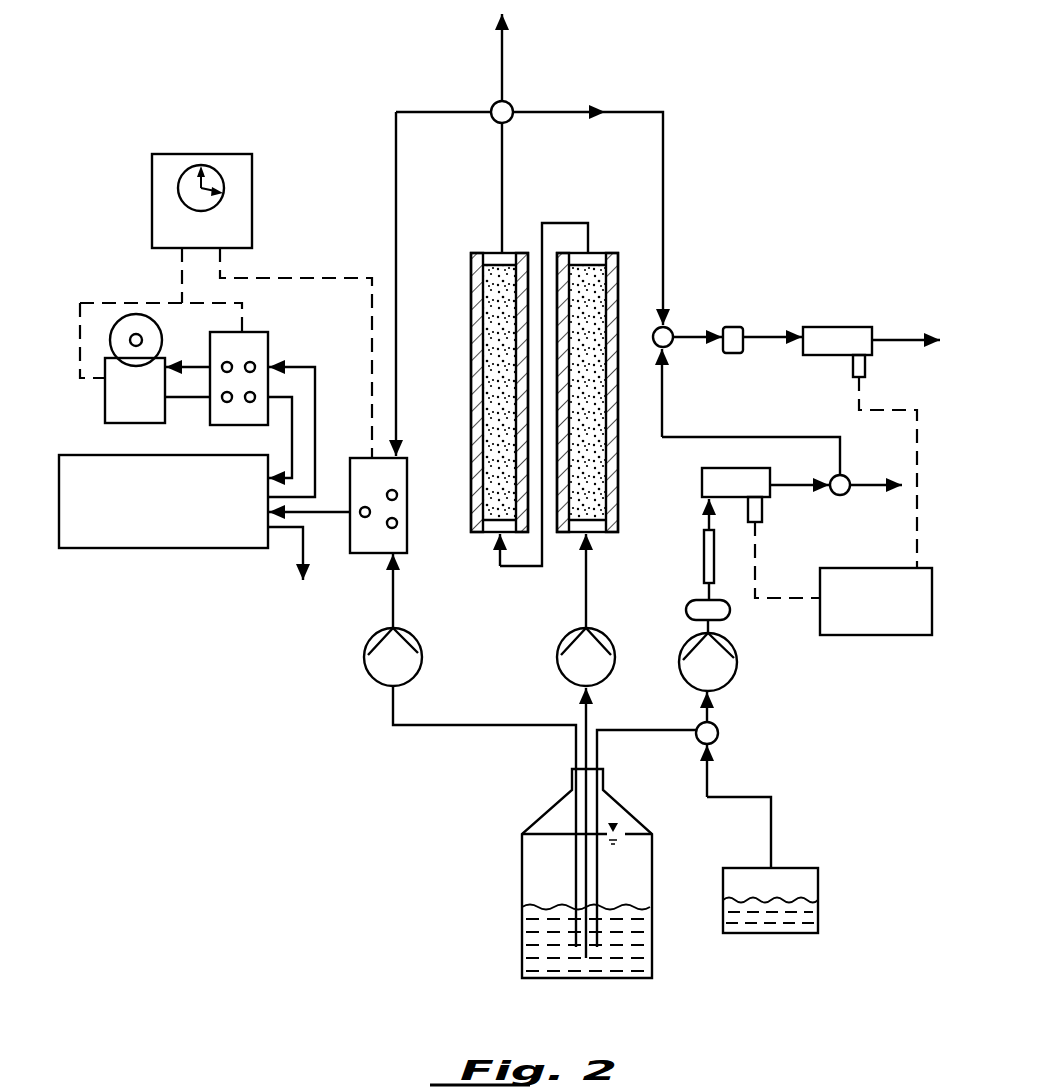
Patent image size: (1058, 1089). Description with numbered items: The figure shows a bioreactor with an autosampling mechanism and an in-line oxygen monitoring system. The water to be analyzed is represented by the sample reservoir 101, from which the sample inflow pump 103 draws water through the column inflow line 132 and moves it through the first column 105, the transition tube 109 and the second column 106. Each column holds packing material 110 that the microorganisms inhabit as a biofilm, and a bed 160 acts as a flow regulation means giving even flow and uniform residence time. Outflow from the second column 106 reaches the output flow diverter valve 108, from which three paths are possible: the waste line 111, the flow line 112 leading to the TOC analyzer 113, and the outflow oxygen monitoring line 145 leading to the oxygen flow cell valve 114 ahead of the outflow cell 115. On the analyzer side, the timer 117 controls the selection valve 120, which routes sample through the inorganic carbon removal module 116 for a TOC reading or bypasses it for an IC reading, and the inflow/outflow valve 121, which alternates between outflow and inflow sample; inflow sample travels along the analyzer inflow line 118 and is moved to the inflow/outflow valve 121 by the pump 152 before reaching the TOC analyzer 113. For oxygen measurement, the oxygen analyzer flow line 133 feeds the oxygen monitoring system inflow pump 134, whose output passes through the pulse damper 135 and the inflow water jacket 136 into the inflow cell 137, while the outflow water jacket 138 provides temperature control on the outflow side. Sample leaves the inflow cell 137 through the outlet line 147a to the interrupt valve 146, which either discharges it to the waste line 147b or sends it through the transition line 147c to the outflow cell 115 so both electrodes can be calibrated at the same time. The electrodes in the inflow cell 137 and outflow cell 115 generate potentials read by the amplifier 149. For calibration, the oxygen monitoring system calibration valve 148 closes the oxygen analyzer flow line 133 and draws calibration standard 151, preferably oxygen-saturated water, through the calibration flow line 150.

The sample reservoir 101 is at (521, 884).
The sample inflow pump 103 is at (572, 664).
The first column 105 is at (622, 300).
The second column 106 is at (469, 318).
The output flow diverter valve 108 is at (507, 108).
The transition tube 109 is at (558, 222).
The packing material 110 is at (655, 458).
The waste line 111 is at (505, 55).
The flow line 112 is at (396, 205).
The TOC analyzer 113 is at (187, 540).
The oxygen flow cell valve 114 is at (668, 326).
The outflow cell 115 is at (837, 330).
The inorganic carbon removal module 116 is at (115, 397).
The timer 117 is at (228, 152).
The analyzer inflow line 118 is at (497, 727).
The selection valve 120 is at (265, 347).
The inflow/outflow valve 121 is at (362, 552).
The column inflow line 132 is at (590, 718).
The oxygen analyzer flow line 133 is at (660, 733).
The oxygen monitoring system inflow pump 134 is at (733, 668).
The pulse damper 135 is at (727, 612).
The inflow water jacket 136 is at (704, 549).
The inflow cell 137 is at (743, 482).
The outflow water jacket 138 is at (735, 327).
The outflow oxygen monitoring line 145 is at (645, 112).
The interrupt valve 146 is at (850, 478).
The outlet line 147a is at (802, 490).
The waste line 147b is at (877, 490).
The transition line 147c is at (665, 410).
The oxygen monitoring system calibration valve 148 is at (718, 735).
The amplifier 149 is at (905, 632).
The calibration flow line 150 is at (772, 835).
The calibration standard 151 is at (808, 893).
The pump 152 is at (380, 667).
The bed 160 is at (610, 565).